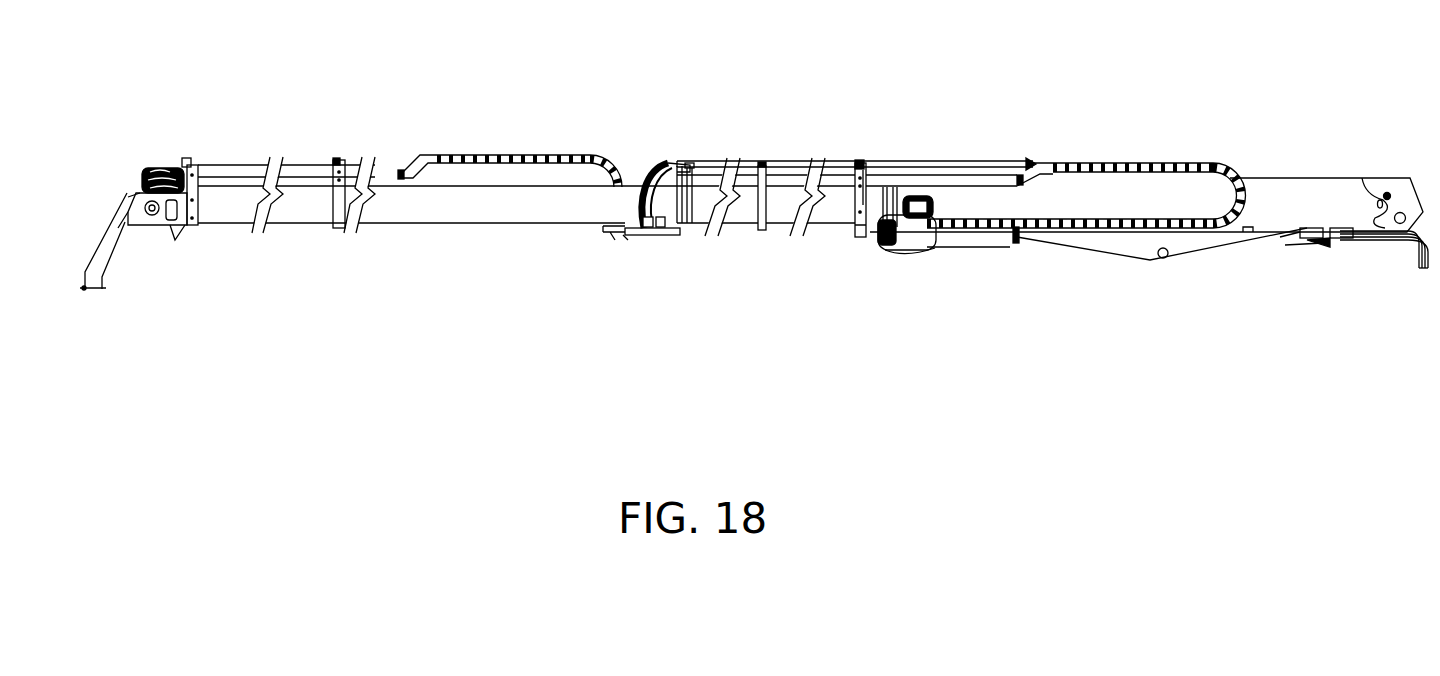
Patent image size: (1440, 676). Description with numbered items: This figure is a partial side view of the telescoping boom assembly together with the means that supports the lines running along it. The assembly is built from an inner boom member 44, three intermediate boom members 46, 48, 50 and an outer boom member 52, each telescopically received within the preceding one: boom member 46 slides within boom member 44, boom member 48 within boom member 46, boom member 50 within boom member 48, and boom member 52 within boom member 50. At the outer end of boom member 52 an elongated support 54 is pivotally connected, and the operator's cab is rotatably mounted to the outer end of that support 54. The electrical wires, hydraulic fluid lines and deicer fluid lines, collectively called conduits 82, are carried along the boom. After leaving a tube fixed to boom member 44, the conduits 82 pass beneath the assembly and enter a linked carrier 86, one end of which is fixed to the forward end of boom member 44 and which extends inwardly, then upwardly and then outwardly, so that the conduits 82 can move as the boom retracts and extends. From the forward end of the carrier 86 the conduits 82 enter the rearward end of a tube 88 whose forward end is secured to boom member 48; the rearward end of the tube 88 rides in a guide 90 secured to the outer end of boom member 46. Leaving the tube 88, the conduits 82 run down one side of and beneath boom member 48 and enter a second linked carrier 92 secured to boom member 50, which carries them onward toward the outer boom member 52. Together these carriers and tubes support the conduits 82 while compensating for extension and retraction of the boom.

The inner boom member 44 is at (1283, 205).
The intermediate boom member 46 is at (835, 213).
The intermediate boom member 48 is at (745, 213).
The intermediate boom member 50 is at (505, 207).
The outer boom member 52 is at (299, 210).
The elongated support 54 is at (112, 243).
The conduits 82 is at (647, 187).
The linked carrier 86 is at (1189, 162).
The tube 88 is at (937, 180).
The guide 90 is at (858, 167).
The linked carrier 92 is at (507, 154).